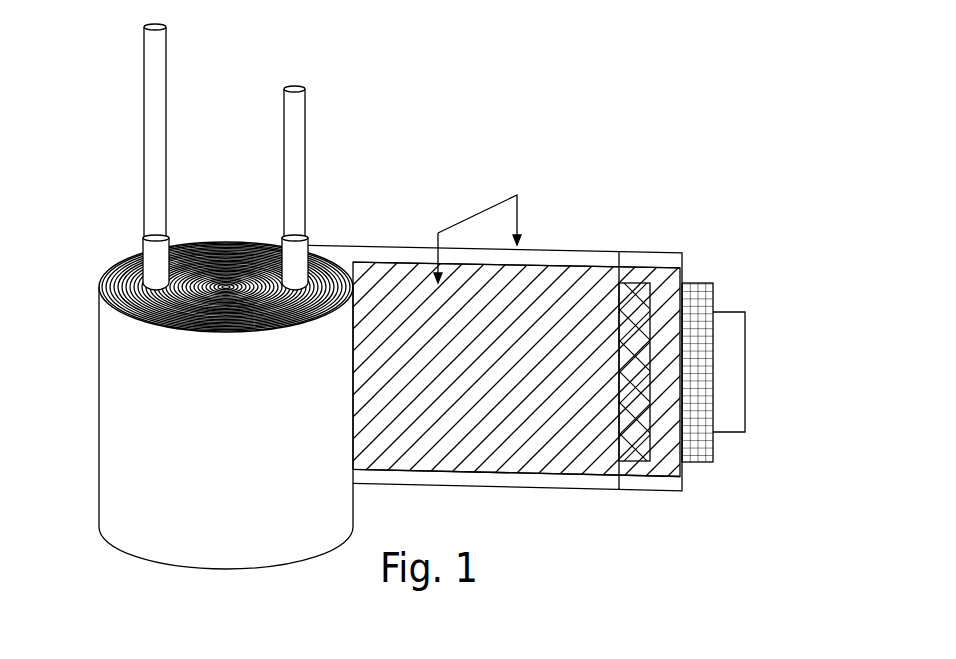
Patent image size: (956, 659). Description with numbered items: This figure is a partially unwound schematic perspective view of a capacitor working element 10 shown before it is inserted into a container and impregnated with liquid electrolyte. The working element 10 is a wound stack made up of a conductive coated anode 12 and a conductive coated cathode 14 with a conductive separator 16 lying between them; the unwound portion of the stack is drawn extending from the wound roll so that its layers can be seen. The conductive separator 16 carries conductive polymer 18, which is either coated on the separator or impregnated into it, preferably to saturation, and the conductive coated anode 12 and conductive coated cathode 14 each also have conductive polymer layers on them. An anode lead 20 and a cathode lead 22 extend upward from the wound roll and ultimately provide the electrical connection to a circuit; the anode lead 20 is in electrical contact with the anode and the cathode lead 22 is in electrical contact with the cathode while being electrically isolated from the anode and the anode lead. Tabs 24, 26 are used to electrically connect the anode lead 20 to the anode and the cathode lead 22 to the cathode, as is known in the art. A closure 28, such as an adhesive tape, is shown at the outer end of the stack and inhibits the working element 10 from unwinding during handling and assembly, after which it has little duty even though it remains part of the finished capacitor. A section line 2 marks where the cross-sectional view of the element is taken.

The working element 10 is at (434, 298).
The conductive coated anode 12 is at (640, 450).
The conductive coated cathode 14 is at (697, 437).
The conductive separator 16 is at (658, 260).
The conductive polymer 18 is at (577, 343).
The anode lead 20 is at (154, 95).
The cathode lead 22 is at (296, 193).
The tab 24 is at (160, 267).
The tab 26 is at (295, 268).
The closure 28 is at (731, 393).
The line 2- 2 is at (475, 243).